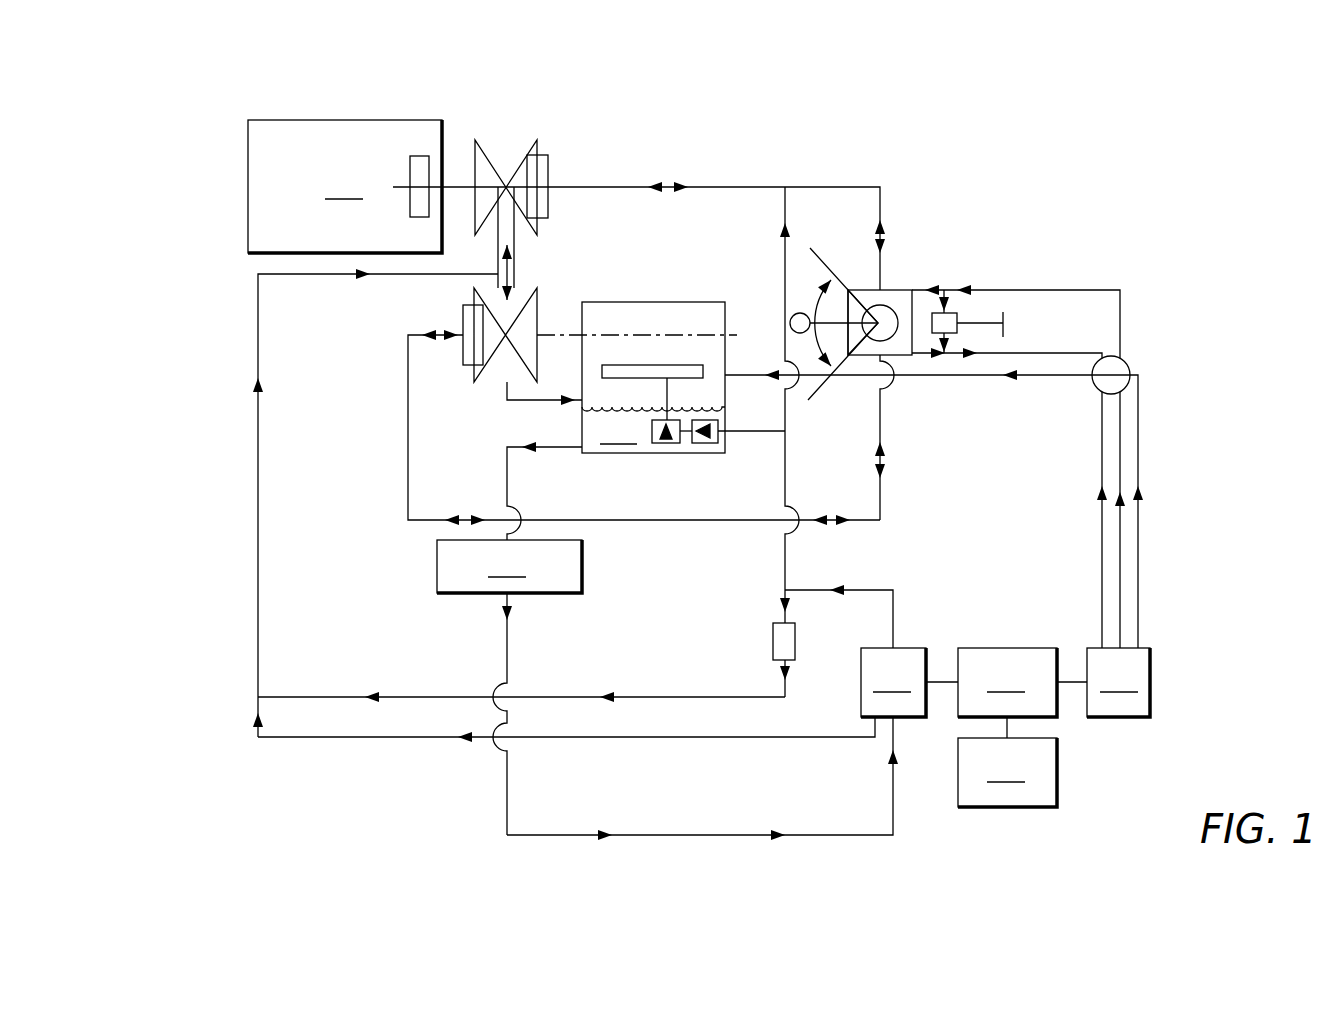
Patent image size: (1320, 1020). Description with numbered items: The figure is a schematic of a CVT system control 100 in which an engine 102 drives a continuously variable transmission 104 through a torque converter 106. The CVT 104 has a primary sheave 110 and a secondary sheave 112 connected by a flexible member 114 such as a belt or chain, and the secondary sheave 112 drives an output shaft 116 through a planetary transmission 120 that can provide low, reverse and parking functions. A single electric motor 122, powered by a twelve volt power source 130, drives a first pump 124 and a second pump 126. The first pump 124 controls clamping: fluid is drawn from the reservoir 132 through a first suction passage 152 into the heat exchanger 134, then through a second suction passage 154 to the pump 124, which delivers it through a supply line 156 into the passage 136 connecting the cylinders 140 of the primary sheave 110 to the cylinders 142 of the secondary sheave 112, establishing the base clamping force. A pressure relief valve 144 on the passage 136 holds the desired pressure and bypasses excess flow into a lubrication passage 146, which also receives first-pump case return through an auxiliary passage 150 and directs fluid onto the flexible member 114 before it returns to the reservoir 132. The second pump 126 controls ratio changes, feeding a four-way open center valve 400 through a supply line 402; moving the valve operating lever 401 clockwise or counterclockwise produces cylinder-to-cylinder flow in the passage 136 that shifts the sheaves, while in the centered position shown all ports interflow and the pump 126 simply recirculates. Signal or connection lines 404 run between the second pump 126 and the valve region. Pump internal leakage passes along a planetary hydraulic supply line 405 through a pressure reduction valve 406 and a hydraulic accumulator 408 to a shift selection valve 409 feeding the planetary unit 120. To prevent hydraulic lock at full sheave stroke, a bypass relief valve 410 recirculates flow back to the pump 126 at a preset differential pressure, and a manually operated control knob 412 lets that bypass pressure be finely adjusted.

The CVT system control 100 is at (1130, 162).
The engine 102 is at (345, 186).
The continuously variable transmission (CVT) 104 is at (576, 108).
The torque converter 106 is at (410, 163).
The primary sheave 110 is at (493, 160).
The secondary sheave 112 is at (538, 305).
The flexible member 114 is at (512, 230).
The output shaft 116 is at (737, 335).
The planetary transmission 120 is at (653, 323).
The motor 122 is at (1007, 682).
The first pump 124 is at (893, 682).
The second pump 126 is at (1118, 682).
The power source 130 is at (1007, 772).
The reservoir 132 is at (653, 426).
The heat exchanger 134 is at (509, 566).
The passage 136 is at (688, 522).
The cylinders of the primary sheave 140 is at (550, 183).
The cylinders of the secondary sheave 142 is at (463, 312).
The pressure relief valve 144 is at (773, 643).
The lubrication passage 146 is at (258, 313).
The auxiliary passage 150 is at (290, 740).
The first suction passage 152 is at (507, 468).
The second suction passage 154 is at (660, 838).
The supply line 156 is at (893, 612).
The valve 400 is at (908, 288).
The valve operating lever 401 is at (800, 313).
The supply line 402 is at (1082, 293).
The signal lines 404 is at (1140, 603).
The planetary hydraulic supply line 405 is at (742, 435).
The pressure reduction valve 406 is at (703, 445).
The hydraulic accumulator 408 is at (667, 445).
The shift selection valve 409 is at (677, 365).
The bypass relief valve 410 is at (958, 318).
The control knob 412 is at (1005, 315).